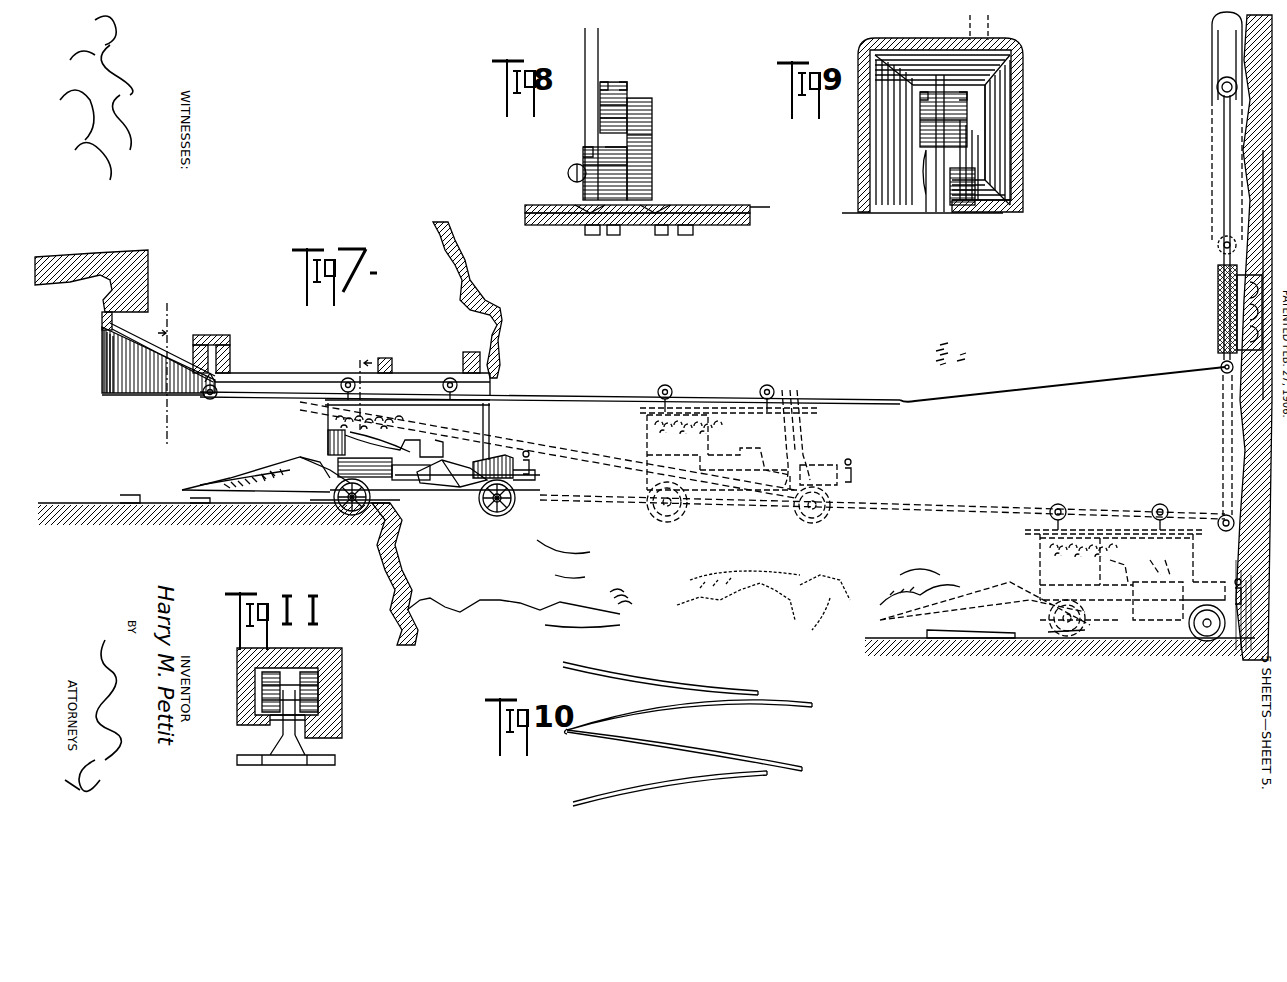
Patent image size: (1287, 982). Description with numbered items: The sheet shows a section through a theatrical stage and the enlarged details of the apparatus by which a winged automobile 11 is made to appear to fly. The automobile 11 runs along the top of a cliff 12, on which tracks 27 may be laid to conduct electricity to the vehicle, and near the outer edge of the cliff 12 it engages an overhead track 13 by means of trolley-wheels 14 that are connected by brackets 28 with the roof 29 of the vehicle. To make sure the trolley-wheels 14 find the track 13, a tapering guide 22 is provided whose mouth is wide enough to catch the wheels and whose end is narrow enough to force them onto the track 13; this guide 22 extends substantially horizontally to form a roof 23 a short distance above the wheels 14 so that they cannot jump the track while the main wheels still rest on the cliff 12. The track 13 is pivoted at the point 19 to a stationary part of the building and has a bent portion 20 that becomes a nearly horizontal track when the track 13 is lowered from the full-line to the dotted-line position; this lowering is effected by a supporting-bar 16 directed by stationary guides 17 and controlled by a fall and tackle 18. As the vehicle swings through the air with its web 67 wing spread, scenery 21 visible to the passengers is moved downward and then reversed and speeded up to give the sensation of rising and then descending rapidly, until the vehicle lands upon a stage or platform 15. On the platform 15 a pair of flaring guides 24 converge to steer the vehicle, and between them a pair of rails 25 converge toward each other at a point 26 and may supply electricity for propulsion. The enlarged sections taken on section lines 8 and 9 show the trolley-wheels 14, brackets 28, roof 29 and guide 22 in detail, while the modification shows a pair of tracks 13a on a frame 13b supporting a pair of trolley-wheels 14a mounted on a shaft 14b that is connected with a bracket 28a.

In FIG. 7, the section line 8 is at (361, 384).
In FIG. 7, the section line 9 is at (161, 367).
In FIG. 7, the automobile 11 is at (328, 436).
In FIG. 7, the cliff 12 is at (380, 548).
In FIG. 8, the overhead track 13 is at (627, 170).
In FIG. 9, the overhead track 13 is at (950, 202).
In FIG. 7, the overhead track 13 is at (500, 392).
In FIG. 11, the tracks 13a is at (315, 715).
In FIG. 11, the frame 13b is at (330, 652).
In FIG. 8, the trolley-wheels 14 is at (615, 92).
In FIG. 9, the trolley-wheels 14 is at (930, 118).
In FIG. 7, the trolley-wheels 14 is at (458, 387).
In FIG. 11, the trolley-wheels 14a is at (313, 695).
In FIG. 11, the shaft 14b is at (300, 675).
In FIG. 7, the stage or platform 15 is at (1062, 640).
In FIG. 7, the supporting-bar 16 is at (1227, 205).
In FIG. 7, the stationary guides 17 is at (1218, 313).
In FIG. 7, the fall and tackle 18 is at (1212, 58).
In FIG. 8, the pivot point 19 is at (568, 173).
In FIG. 7, the pivot point 19 is at (210, 400).
In FIG. 7, the bent portion 20 is at (1043, 388).
In FIG. 7, the scenery 21 is at (915, 346).
In FIG. 9, the tapering guide 22 is at (1003, 137).
In FIG. 7, the tapering guide 22 is at (128, 390).
In FIG. 9, the roof 23 is at (930, 82).
In FIG. 7, the roof 23 is at (335, 372).
In FIG. 7, the flaring guides 24 is at (930, 640).
In FIG. 10, the flaring guides 24 is at (648, 682).
In FIG. 7, the rails 25 is at (1137, 640).
In FIG. 10, the rails 25 is at (690, 707).
In FIG. 10, the converging point 26 is at (567, 734).
In FIG. 7, the tracks 27 is at (110, 502).
In FIG. 8, the brackets 28 is at (652, 148).
In FIG. 9, the brackets 28 is at (930, 192).
In FIG. 11, the bracket 28a is at (283, 735).
In FIG. 8, the roof of the vehicle 29 is at (540, 206).
In FIG. 7, the web 67 is at (285, 468).